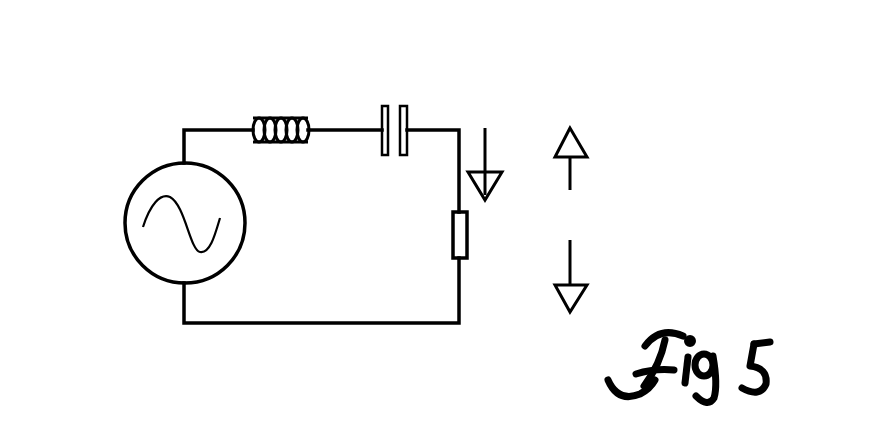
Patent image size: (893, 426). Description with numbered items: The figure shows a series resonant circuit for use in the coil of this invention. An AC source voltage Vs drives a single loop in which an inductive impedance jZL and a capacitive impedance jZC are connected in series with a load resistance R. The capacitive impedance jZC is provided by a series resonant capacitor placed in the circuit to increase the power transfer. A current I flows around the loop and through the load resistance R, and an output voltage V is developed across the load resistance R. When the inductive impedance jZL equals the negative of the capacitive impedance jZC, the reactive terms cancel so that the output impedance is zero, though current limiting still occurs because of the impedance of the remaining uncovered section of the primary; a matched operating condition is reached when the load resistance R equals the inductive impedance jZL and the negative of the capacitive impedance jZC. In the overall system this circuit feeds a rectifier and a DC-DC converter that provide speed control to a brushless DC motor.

The source voltage Vs is at (156, 213).
The inductive impedance jZL is at (293, 117).
The capacitive impedance jZC is at (482, 60).
The current I is at (491, 148).
The load resistance R is at (484, 225).
The output voltage V is at (569, 220).